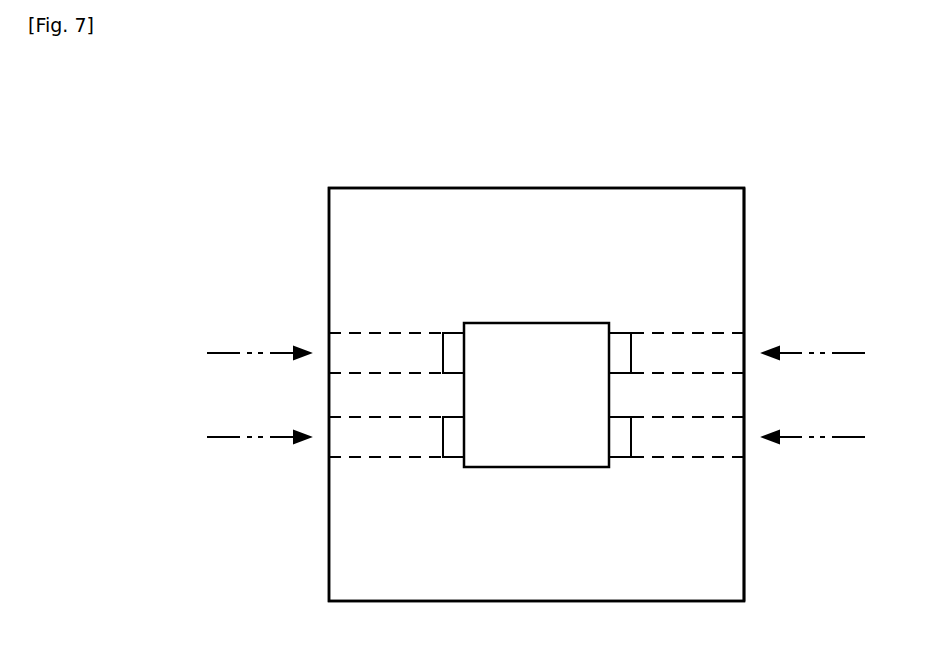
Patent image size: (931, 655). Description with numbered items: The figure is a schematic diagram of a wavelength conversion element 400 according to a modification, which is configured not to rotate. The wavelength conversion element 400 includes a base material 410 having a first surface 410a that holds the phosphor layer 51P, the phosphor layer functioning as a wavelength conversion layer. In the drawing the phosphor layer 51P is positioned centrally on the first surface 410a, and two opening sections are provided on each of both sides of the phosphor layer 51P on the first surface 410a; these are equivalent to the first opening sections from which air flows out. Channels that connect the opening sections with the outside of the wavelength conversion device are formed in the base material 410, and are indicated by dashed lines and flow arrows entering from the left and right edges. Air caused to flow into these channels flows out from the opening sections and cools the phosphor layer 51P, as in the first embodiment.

The wavelength conversion element 400 is at (844, 104).
The base material 410 is at (663, 188).
The first surface 410a is at (734, 262).
The phosphor layer 51P is at (545, 340).